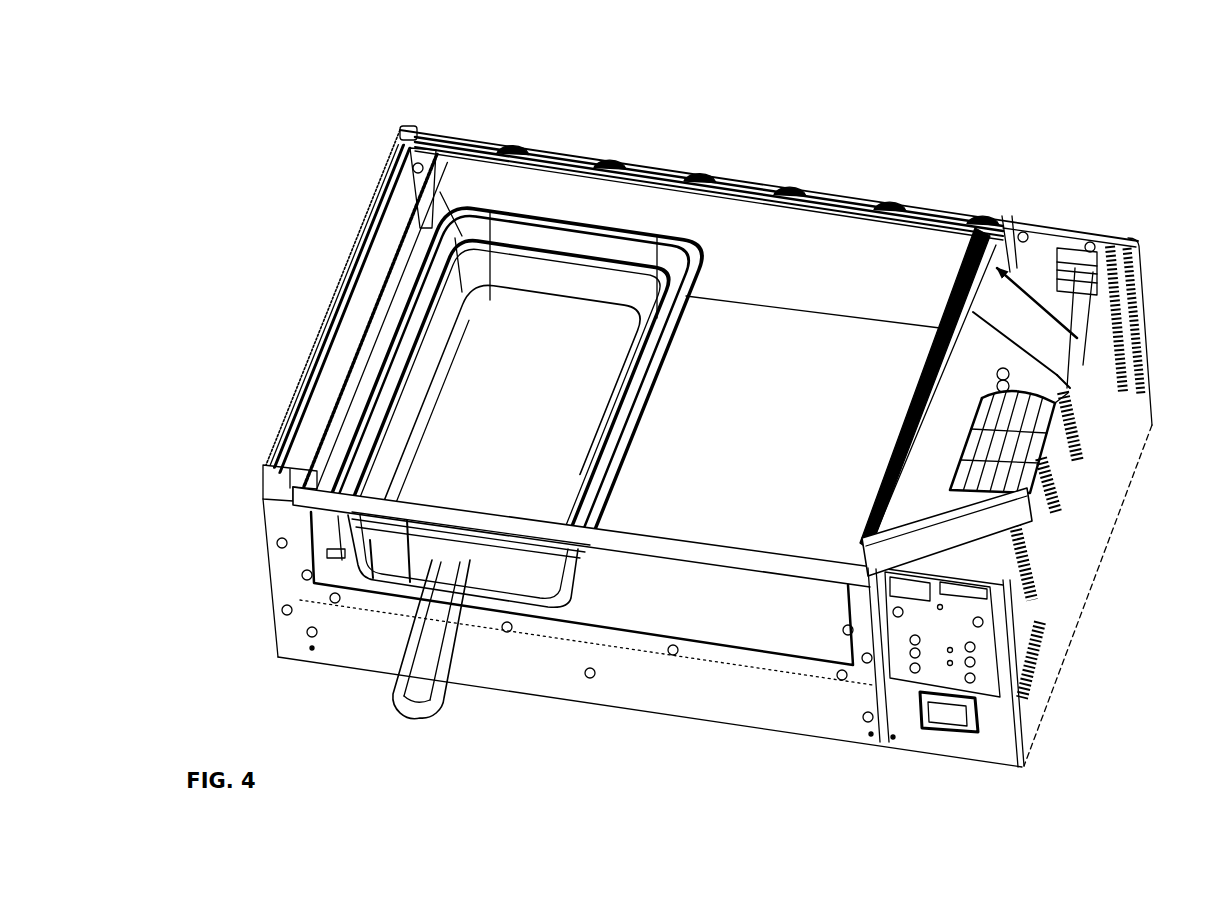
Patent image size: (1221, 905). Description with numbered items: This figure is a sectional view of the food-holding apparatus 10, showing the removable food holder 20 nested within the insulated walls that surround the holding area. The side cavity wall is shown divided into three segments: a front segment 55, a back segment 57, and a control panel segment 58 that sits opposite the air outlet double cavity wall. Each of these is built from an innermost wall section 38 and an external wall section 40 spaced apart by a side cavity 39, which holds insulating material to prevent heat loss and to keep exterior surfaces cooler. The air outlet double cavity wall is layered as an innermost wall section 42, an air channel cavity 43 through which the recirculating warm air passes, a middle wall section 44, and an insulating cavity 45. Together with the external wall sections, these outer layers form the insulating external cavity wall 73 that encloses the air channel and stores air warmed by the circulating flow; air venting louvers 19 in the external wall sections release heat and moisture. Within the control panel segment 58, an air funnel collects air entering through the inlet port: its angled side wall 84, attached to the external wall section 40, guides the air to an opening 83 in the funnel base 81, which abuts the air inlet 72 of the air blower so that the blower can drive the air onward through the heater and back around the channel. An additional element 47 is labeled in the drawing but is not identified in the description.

The food-holding apparatus 10 is at (1163, 270).
The air venting louvers 19 is at (1080, 342).
The removable food holder 20 is at (450, 708).
The innermost wall section 38 is at (823, 266).
The side cavity 39 is at (1036, 254).
The external wall section 40 is at (537, 154).
The innermost wall section 42 is at (424, 224).
The air channel cavity 43 is at (372, 280).
The middle wall section 44 is at (305, 400).
The insulating cavity 45 is at (321, 323).
The opening 47 is at (863, 354).
The front segment 55 is at (643, 686).
The back segment 57 is at (777, 182).
The control panel segment 58 is at (1060, 594).
The air inlet 72 is at (1040, 460).
The insulating external cavity wall 73 is at (356, 222).
The base 81 is at (1047, 397).
The opening 83 is at (1037, 480).
The angled side wall 84 is at (1025, 309).